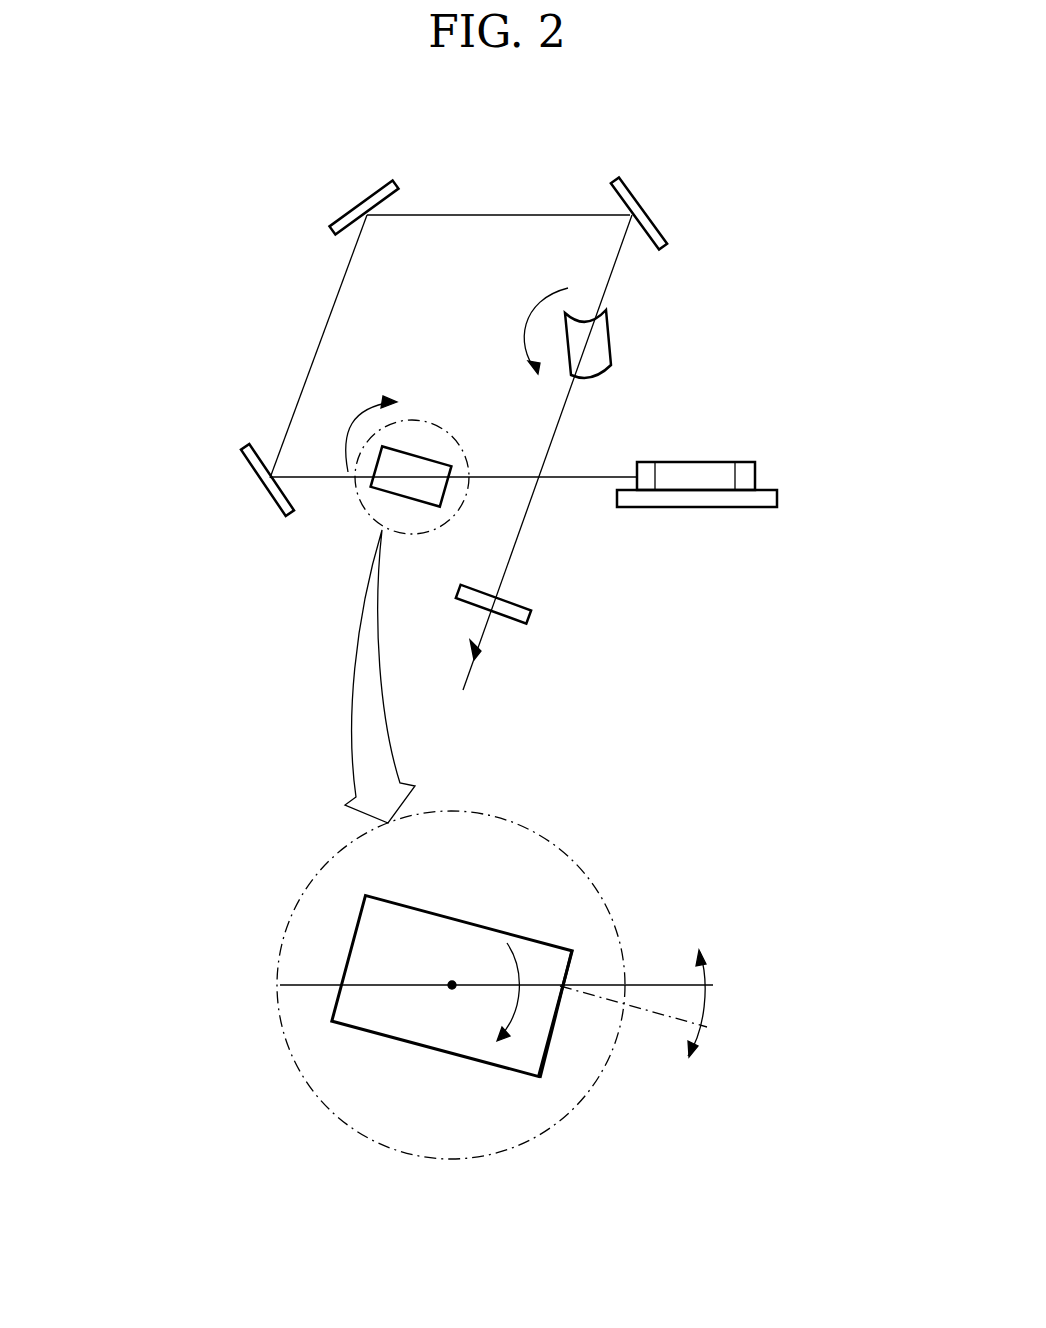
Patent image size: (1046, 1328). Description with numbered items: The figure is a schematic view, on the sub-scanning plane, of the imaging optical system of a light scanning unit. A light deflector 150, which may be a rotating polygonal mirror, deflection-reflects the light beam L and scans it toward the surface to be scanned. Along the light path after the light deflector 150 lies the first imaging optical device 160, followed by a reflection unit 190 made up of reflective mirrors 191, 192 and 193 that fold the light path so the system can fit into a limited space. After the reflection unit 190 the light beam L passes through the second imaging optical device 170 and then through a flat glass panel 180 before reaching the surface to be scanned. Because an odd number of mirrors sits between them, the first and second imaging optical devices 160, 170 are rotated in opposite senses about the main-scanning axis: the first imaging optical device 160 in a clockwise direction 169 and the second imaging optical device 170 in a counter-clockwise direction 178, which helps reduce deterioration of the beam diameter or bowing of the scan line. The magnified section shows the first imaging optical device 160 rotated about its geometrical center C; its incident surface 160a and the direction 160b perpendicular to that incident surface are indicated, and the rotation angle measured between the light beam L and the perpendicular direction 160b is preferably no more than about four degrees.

The light deflector 150 is at (670, 508).
The first imaging optical device 160 is at (377, 489).
The incident surface 160a is at (541, 1079).
The direction perpendicular to the incident surface 160b is at (657, 1015).
The clockwise direction 169 is at (358, 405).
The second imaging optical device 170 is at (611, 337).
The counter-clockwise direction 178 is at (538, 312).
The flat glass panel 180 is at (515, 625).
The reflection unit 190 is at (155, 438).
The reflective mirror 191 is at (257, 480).
The reflective mirror 192 is at (357, 210).
The reflective mirror 193 is at (641, 202).
The light beam L is at (321, 343).
The geometrical center C is at (448, 990).